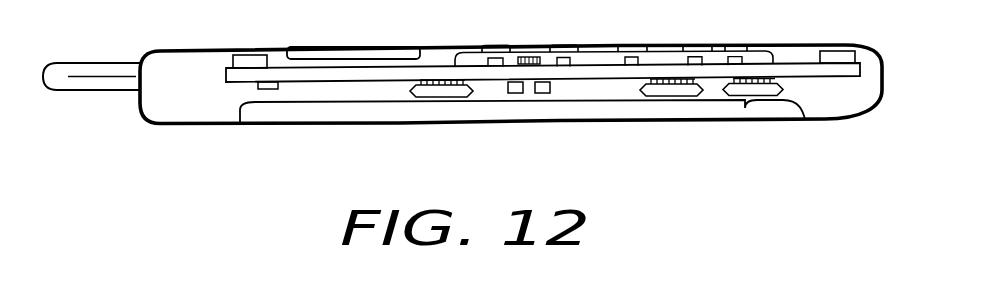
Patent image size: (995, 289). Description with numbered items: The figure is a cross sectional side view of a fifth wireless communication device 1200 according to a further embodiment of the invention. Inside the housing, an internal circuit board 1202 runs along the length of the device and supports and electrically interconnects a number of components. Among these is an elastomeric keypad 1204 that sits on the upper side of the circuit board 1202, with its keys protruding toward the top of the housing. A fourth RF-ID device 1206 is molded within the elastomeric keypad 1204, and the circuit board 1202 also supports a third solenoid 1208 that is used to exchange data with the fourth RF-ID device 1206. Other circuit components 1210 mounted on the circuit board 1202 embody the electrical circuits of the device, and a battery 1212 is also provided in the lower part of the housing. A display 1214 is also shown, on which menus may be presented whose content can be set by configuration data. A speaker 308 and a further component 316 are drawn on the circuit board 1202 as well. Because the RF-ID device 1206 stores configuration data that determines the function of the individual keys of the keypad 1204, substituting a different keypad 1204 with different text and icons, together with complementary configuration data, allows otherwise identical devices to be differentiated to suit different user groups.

The fifth wireless communication device 1200 is at (683, 236).
The internal circuit board 1202 is at (226, 70).
The speaker 308 is at (231, 60).
The display 1214 is at (350, 46).
The elastomeric keypad 1204 is at (632, 44).
The fourth RF-ID device 1206 is at (518, 60).
The component on circuit board 316 is at (856, 50).
The battery 1212 is at (303, 113).
The other circuit components 1210 is at (438, 98).
The third solenoid 1208 is at (530, 90).